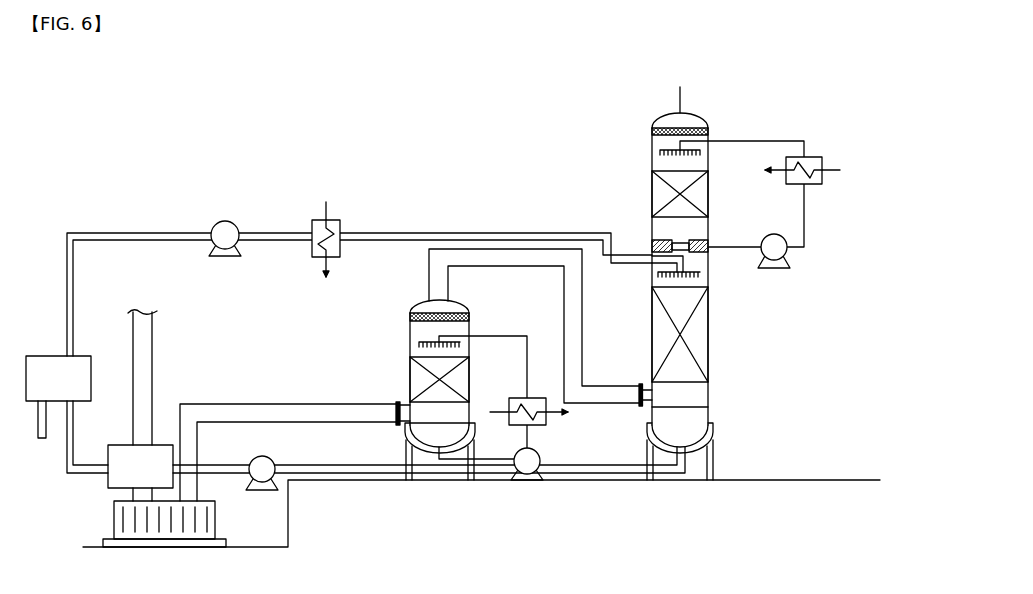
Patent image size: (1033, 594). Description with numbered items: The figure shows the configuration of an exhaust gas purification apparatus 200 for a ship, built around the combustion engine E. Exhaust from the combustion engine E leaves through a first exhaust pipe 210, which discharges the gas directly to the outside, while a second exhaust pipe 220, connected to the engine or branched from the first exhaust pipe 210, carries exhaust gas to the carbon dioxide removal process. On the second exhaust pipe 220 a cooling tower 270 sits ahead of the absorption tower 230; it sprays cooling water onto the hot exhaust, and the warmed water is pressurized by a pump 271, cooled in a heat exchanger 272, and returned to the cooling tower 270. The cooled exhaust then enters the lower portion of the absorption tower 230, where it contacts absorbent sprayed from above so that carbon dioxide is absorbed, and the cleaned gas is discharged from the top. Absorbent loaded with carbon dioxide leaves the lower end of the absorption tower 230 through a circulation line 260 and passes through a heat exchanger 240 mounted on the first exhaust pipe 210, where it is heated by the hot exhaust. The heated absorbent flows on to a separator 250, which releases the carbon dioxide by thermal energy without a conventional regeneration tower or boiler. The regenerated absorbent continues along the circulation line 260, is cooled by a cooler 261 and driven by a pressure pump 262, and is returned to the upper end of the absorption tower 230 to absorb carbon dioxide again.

The exhaust gas purification apparatus 200 is at (70, 131).
The first exhaust pipe 210 is at (152, 378).
The second exhaust pipe 220 is at (513, 268).
The absorption tower 230 is at (652, 280).
The heat exchanger 240 is at (114, 445).
The separator 250 is at (30, 356).
The circulation line 260 is at (88, 233).
The cooler 261 is at (318, 222).
The pressure pump 262 is at (225, 227).
The cooling tower 270 is at (410, 336).
The pump 271 is at (539, 456).
The heat exchanger 272 is at (515, 398).
The combustion engine E is at (216, 520).